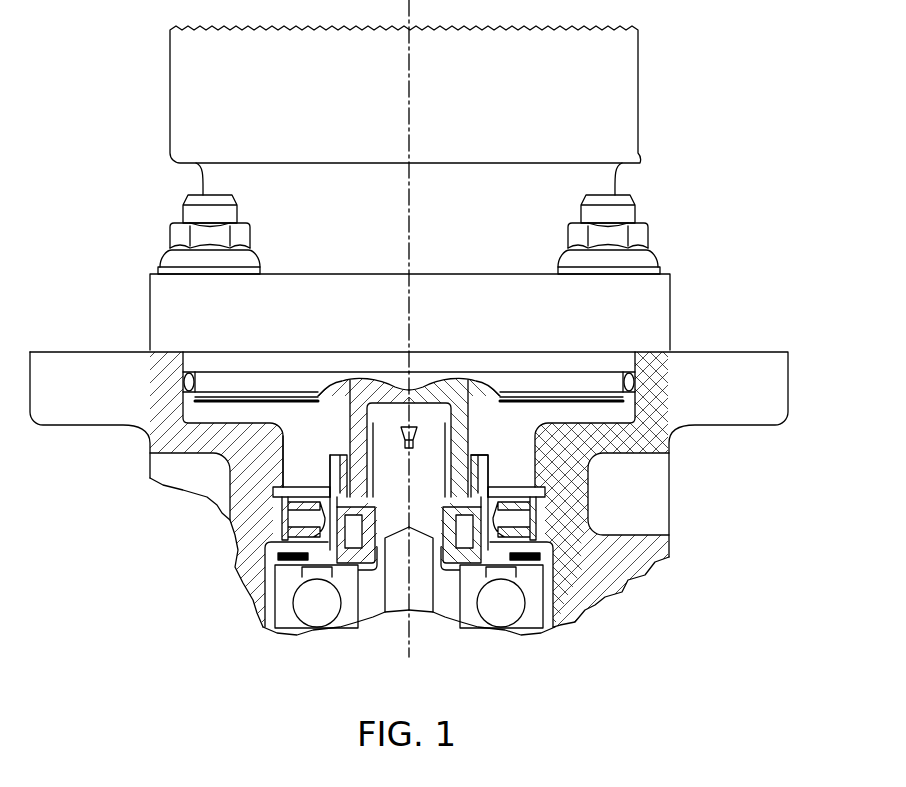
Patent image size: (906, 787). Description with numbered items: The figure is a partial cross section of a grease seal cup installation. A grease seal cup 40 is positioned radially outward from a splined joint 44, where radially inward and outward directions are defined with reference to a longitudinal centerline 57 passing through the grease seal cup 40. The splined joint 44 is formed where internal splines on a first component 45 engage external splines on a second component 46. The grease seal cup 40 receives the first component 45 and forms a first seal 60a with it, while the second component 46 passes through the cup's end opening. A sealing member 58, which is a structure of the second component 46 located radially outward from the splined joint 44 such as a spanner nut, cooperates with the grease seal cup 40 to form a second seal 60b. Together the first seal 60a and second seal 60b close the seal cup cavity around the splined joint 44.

The longitudinal centerline 57 is at (411, 99).
The grease seal cup 40 is at (345, 438).
The splined joint 44 is at (370, 428).
The second component 46 is at (415, 445).
The first component 45 is at (466, 452).
The sealing member 58 is at (338, 497).
The first seal 60a is at (347, 443).
The second seal 60b is at (343, 467).